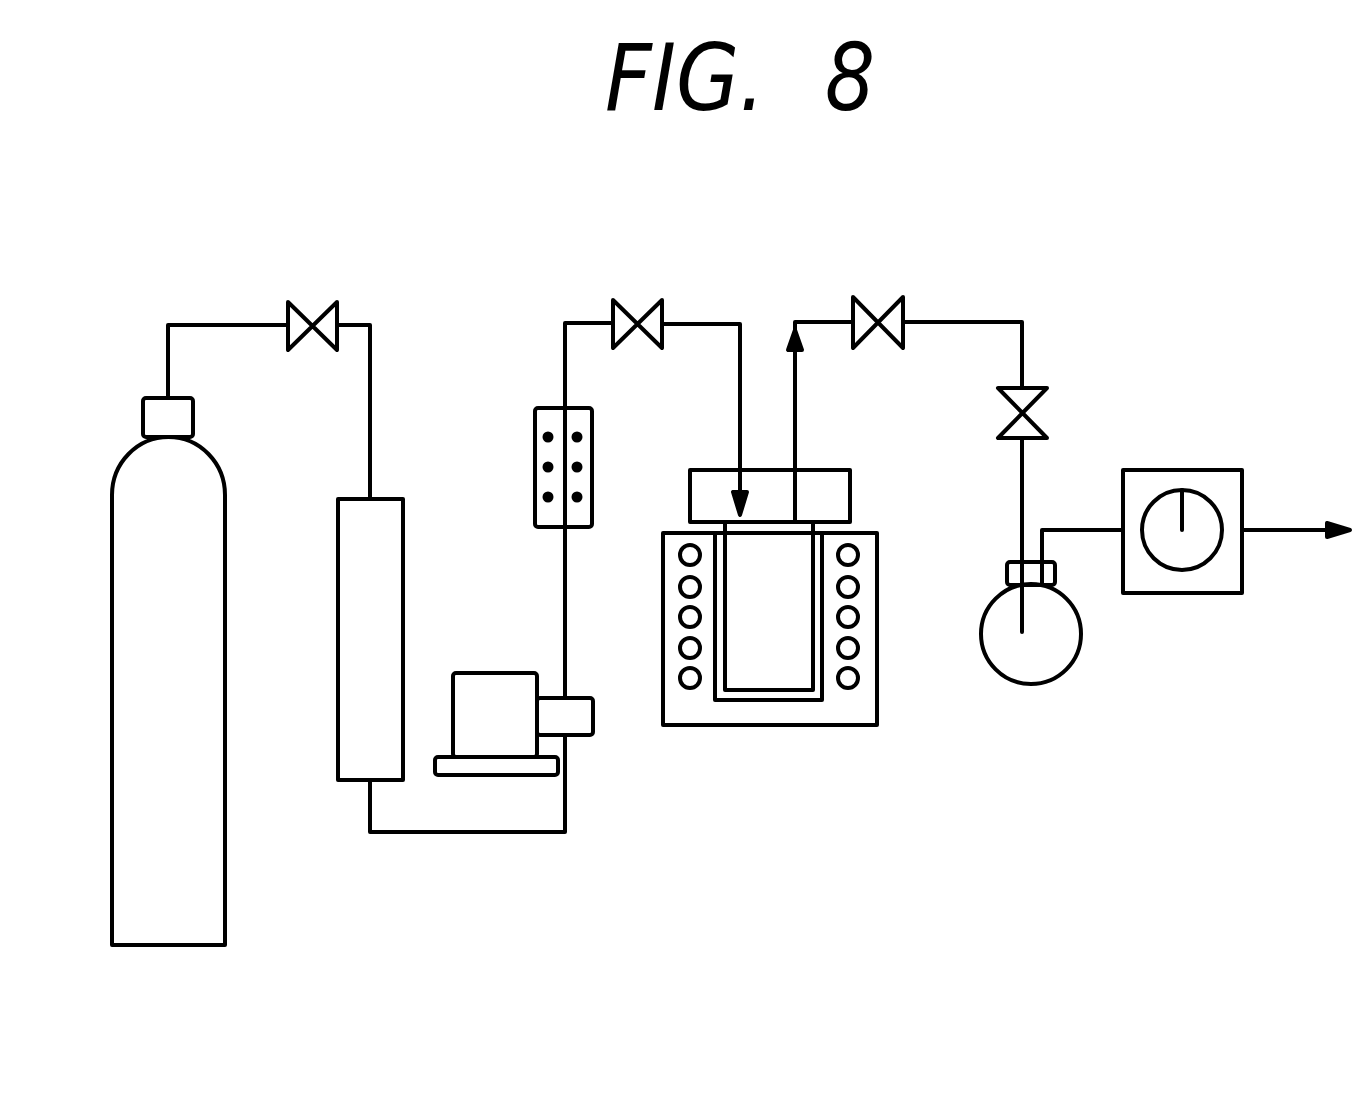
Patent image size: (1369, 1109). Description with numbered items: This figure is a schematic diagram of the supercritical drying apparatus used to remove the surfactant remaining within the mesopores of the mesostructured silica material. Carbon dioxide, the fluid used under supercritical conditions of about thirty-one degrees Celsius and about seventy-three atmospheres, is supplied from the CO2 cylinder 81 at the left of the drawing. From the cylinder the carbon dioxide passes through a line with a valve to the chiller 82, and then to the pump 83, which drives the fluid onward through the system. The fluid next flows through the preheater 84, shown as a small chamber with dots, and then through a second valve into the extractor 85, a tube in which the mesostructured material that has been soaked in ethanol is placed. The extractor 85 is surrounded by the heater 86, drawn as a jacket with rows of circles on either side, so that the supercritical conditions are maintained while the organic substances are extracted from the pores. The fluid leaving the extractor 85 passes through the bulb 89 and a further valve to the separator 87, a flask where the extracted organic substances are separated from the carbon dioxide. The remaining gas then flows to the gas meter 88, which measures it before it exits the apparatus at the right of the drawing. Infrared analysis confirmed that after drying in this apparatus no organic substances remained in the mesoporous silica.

The CO2 cylinder 81 is at (226, 518).
The chiller 82 is at (404, 545).
The pump 83 is at (483, 742).
The preheater 84 is at (593, 460).
The extractor 85 is at (782, 672).
The heater 86 is at (691, 688).
The separator 87 is at (1037, 685).
The gas meter 88 is at (1207, 470).
The bulb 89 is at (872, 297).